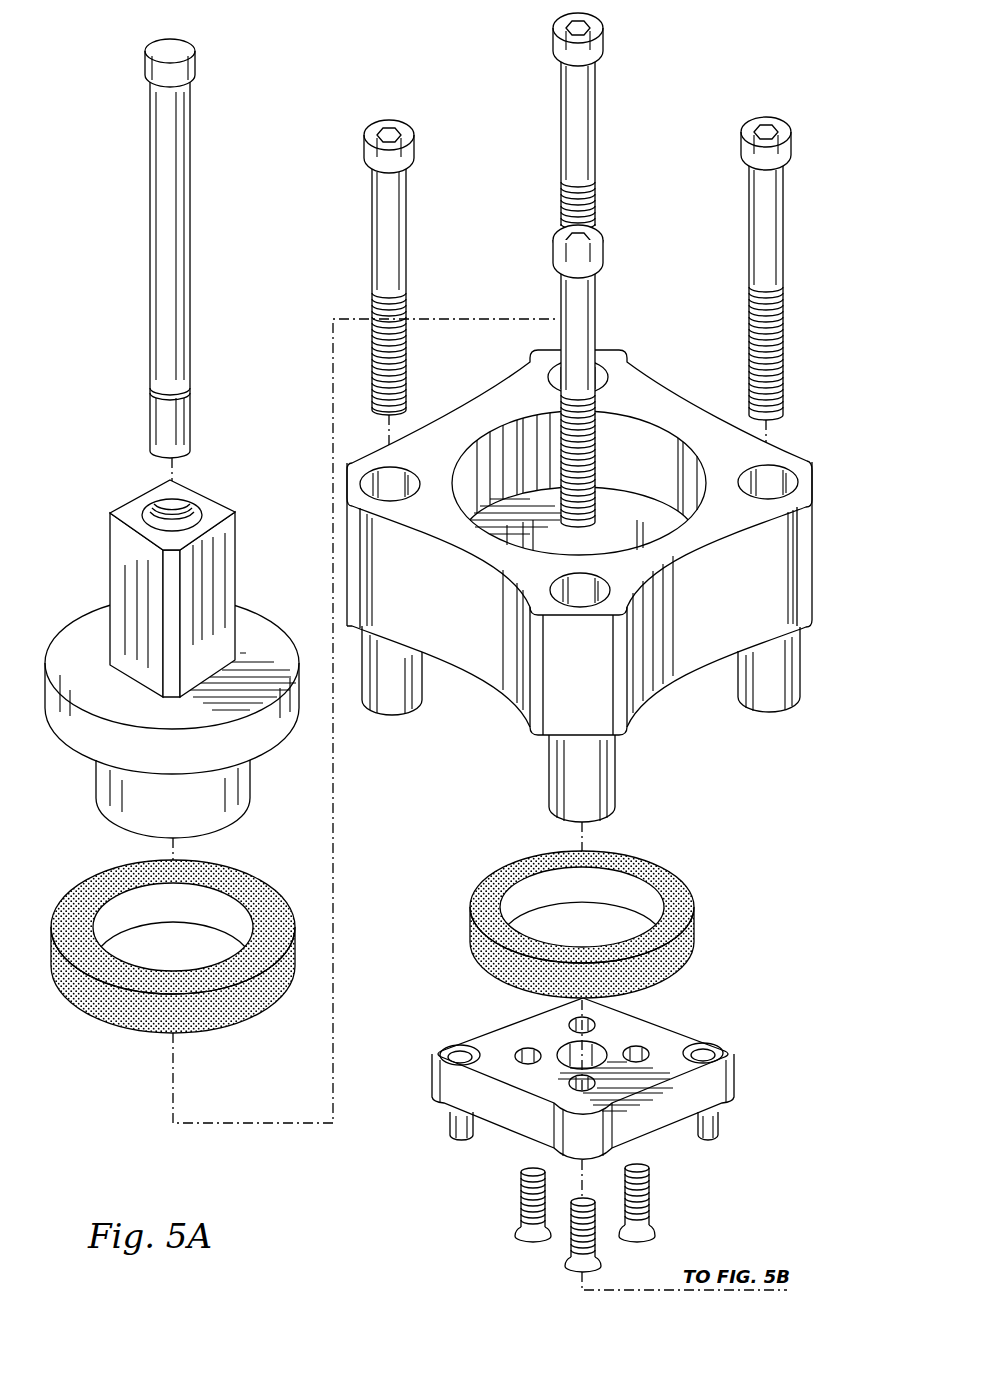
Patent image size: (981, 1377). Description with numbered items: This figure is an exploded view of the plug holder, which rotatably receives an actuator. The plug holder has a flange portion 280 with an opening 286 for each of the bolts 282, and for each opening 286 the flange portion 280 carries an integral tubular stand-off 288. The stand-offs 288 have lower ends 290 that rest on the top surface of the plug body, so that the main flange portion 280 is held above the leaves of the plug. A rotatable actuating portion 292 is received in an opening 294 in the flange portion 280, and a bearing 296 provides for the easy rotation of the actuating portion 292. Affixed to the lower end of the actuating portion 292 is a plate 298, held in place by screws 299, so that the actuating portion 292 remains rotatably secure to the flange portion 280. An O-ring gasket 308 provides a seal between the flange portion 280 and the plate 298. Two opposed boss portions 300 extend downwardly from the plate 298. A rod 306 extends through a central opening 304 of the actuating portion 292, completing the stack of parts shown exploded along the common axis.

The flange portion 280 is at (722, 450).
The bolts 282 is at (380, 137).
The opening 286 is at (553, 376).
The tubular stand-offs 288 is at (395, 700).
The lower ends 290 is at (590, 826).
The rotatable actuating portion 292 is at (110, 531).
The opening 294 is at (645, 458).
The bearing 296 is at (94, 892).
The plate 298 is at (657, 1032).
The screws 299 is at (647, 1198).
The boss portions 300 is at (452, 1136).
The central opening 304 is at (178, 513).
The rod 306 is at (162, 166).
The O-ring gasket 308 is at (512, 875).